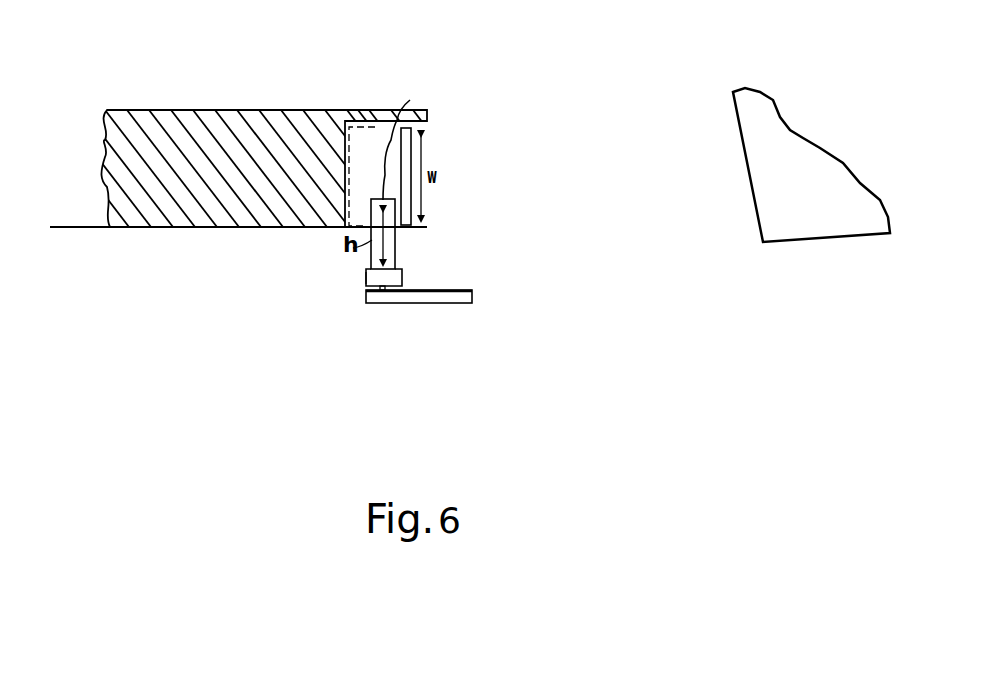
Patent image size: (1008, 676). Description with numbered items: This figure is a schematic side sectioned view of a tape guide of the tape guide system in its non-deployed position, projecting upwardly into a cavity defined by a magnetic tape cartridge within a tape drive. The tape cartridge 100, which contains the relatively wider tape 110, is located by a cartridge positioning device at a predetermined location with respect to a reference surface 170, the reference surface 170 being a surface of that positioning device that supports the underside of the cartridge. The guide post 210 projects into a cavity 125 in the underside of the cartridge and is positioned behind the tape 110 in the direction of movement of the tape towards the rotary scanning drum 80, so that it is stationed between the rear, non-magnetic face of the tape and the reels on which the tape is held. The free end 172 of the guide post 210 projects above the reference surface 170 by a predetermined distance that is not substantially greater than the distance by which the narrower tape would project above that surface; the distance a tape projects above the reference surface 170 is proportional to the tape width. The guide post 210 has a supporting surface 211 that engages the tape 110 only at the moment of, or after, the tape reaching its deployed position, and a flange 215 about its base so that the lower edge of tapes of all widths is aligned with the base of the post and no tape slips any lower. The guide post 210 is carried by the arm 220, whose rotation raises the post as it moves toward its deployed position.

The tape cartridge 100 is at (208, 120).
The cavity 125 is at (380, 137).
The free end 172 is at (410, 100).
The tape 110 is at (410, 153).
The supporting surface 211 is at (395, 243).
The guide post 210 is at (392, 266).
The flange 215 is at (365, 277).
The arm 220 is at (463, 300).
The reference surface 170 is at (80, 228).
The rotary scanning drum 80 is at (785, 155).